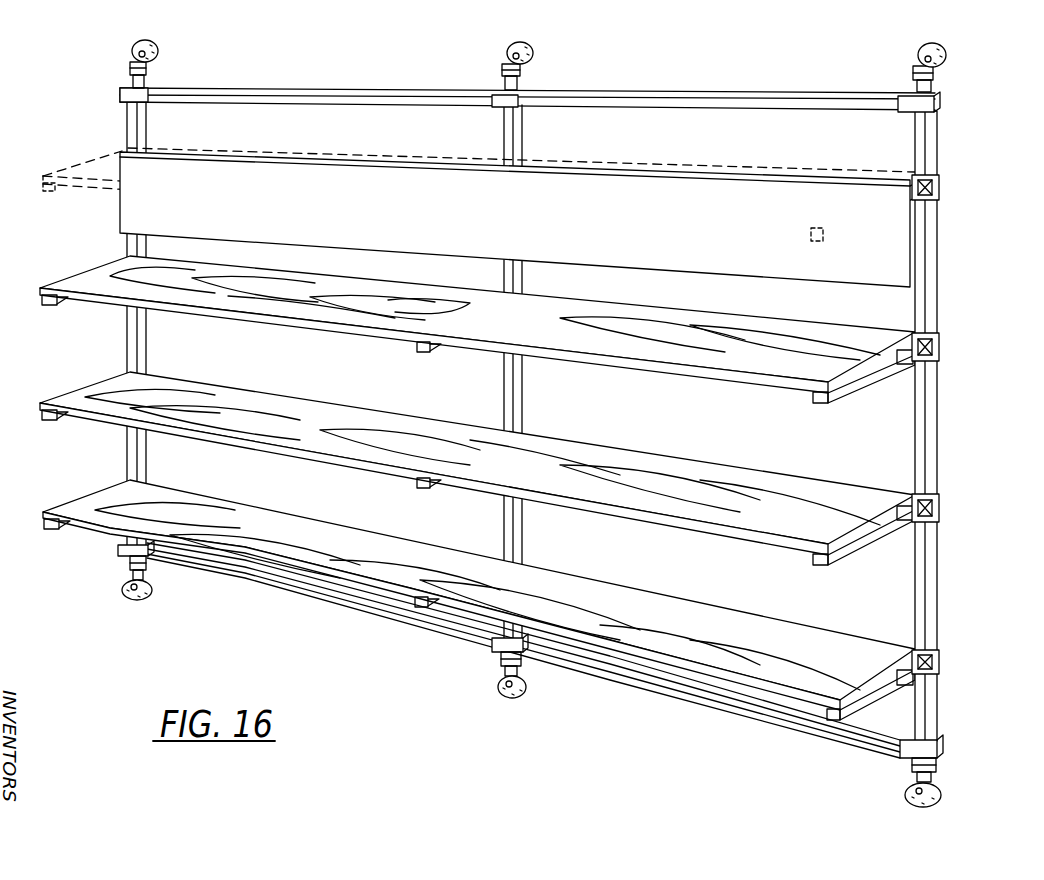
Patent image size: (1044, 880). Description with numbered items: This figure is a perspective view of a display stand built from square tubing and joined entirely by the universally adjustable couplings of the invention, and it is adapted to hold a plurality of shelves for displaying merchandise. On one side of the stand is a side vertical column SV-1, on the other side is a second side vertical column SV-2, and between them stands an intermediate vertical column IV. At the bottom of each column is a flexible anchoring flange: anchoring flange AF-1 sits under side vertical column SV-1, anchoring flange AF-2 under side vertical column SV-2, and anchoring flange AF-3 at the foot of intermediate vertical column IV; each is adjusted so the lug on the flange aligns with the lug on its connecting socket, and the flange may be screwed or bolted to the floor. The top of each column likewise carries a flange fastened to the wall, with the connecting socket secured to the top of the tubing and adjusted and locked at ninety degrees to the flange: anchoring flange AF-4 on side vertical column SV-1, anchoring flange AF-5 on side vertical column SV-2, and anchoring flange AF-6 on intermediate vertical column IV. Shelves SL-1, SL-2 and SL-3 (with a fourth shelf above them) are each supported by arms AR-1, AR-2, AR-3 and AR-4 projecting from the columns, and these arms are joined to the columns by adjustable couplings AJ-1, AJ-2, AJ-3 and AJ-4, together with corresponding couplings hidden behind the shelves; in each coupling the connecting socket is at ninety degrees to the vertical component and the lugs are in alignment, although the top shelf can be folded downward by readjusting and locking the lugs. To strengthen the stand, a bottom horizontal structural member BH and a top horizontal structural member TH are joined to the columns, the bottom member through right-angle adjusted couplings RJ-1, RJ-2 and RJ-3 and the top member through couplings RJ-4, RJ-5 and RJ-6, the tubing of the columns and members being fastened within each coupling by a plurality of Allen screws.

The side vertical column SV-1 is at (938, 452).
The side vertical column SV-2 is at (126, 340).
The intermediate vertical column IV is at (523, 402).
The top horizontal structural member TH is at (347, 90).
The bottom horizontal structural member BH is at (405, 623).
The shelf SL-1 is at (479, 595).
The shelf SL-2 is at (477, 463).
The shelf SL-3 is at (477, 324).
The adjustable coupling AJ-1 is at (940, 667).
The adjustable coupling AJ-2 is at (940, 506).
The adjustable coupling AJ-3 is at (940, 343).
The adjustable coupling AJ-4 is at (940, 186).
The arm AR-1 is at (858, 706).
The arm AR-2 is at (845, 554).
The arm AR-3 is at (845, 389).
The arm AR-4 is at (836, 240).
The right-angle adjusted coupling RJ-1 is at (941, 748).
The right-angle adjusted coupling RJ-2 is at (122, 556).
The right-angle adjusted coupling RJ-3 is at (492, 649).
The right-angle adjusted coupling RJ-4 is at (941, 100).
The right-angle adjusted coupling RJ-5 is at (120, 90).
The right-angle adjusted coupling RJ-6 is at (500, 106).
The anchoring flange AF-1 is at (910, 797).
The anchoring flange AF-2 is at (147, 600).
The anchoring flange AF-3 is at (525, 693).
The anchoring flange AF-4 is at (929, 44).
The anchoring flange AF-5 is at (158, 50).
The anchoring flange AF-6 is at (533, 50).